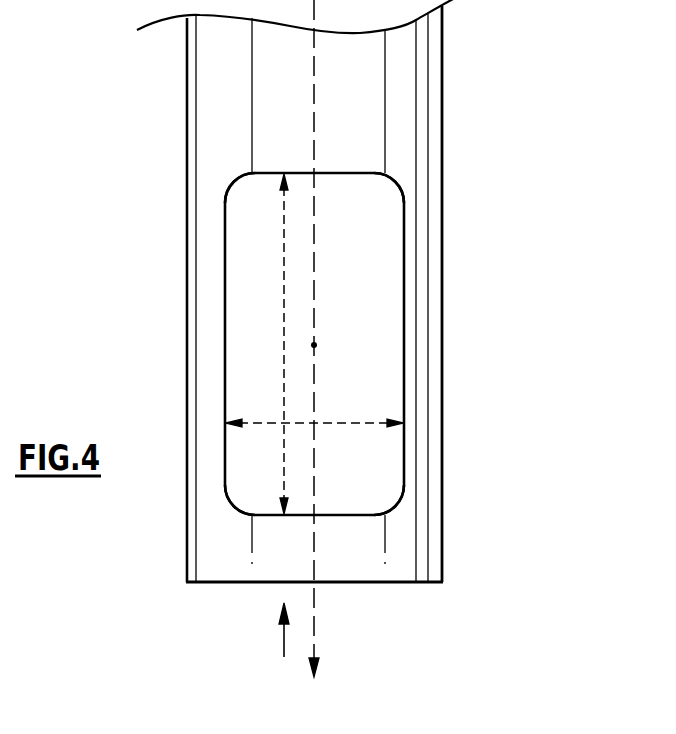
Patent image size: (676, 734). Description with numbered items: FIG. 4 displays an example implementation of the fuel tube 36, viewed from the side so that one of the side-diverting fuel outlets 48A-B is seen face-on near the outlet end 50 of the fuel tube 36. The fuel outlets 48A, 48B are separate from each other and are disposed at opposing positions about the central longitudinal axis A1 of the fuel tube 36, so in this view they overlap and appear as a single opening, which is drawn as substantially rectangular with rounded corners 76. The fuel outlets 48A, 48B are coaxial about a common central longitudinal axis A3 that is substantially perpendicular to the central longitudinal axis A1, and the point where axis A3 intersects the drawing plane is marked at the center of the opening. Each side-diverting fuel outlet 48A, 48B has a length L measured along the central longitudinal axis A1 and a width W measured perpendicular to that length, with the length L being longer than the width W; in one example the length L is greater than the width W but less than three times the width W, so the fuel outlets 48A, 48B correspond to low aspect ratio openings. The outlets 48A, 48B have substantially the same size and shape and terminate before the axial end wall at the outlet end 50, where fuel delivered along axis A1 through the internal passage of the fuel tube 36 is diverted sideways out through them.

The fuel tube 36 is at (444, 72).
The side-diverting fuel outlet 48A is at (245, 280).
The side-diverting fuel outlet 48B is at (250, 378).
The rounded corners 76 is at (231, 182).
The length L is at (284, 262).
The width W is at (343, 423).
The central longitudinal axis A1 is at (316, 627).
The common central longitudinal axis A3 is at (316, 345).
The outlet end 50 is at (284, 657).